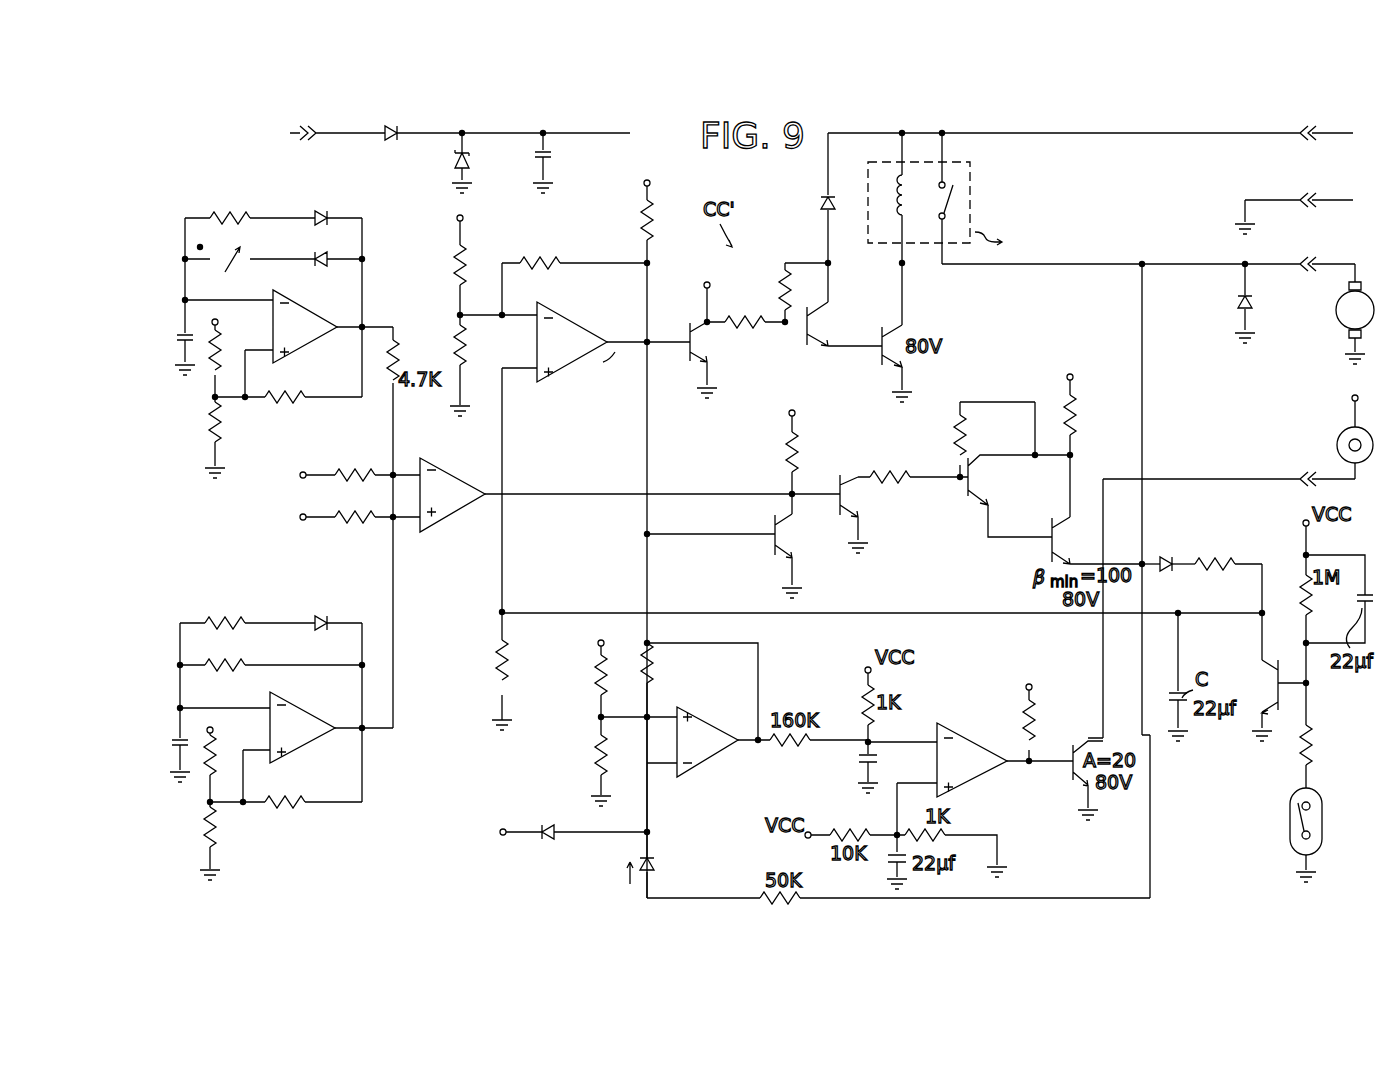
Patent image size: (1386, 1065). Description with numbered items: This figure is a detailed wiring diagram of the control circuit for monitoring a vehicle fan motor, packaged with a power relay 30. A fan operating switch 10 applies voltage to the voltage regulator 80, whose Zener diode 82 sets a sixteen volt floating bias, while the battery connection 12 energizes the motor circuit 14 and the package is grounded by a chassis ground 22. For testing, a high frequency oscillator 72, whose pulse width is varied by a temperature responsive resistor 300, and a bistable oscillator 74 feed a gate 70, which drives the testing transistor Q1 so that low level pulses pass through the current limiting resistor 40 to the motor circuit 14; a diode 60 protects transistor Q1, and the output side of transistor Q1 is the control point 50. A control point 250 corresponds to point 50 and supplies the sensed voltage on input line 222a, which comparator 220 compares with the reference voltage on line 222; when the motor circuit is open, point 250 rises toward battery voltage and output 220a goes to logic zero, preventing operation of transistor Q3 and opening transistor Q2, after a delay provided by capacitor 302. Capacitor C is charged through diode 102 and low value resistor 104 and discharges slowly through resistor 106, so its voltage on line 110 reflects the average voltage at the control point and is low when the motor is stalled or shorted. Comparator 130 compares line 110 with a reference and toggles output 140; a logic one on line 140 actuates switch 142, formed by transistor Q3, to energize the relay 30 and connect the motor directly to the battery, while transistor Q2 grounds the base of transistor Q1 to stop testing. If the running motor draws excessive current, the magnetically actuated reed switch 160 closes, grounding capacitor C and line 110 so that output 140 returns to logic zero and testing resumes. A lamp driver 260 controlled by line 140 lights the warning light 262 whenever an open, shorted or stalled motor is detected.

The fan operating switch 10 is at (309, 142).
The voltage regulator 80 is at (614, 133).
The Zener diode 82 is at (450, 170).
The temperature responsive resistor 300 is at (215, 247).
The high frequency oscillator 72 is at (365, 258).
The bistable oscillator 74 is at (368, 630).
The gate 70 is at (466, 480).
The comparator 130 is at (580, 315).
The output line 140 is at (645, 449).
The switch 142 is at (698, 344).
The power relay 30 is at (980, 190).
The battery connection 12 is at (1182, 137).
The chassis ground 22 is at (1333, 200).
The control point 50 is at (1144, 264).
The motor circuit 14 is at (1336, 312).
The diode 60 is at (1250, 304).
The current limiting resistor 40 is at (1064, 404).
The resistor 106 is at (498, 682).
The reference voltage line 222 is at (600, 715).
The comparator 220 is at (711, 726).
The output line 220a is at (747, 735).
The input line 222a is at (648, 792).
The control line 110 is at (902, 608).
The capacitor 302 is at (857, 770).
The lamp driver 260 is at (955, 730).
The control point 250 is at (1142, 562).
The diode 102 is at (1169, 560).
The resistor 104 is at (1214, 557).
The warning light 262 is at (1336, 446).
The magnetically actuated switch 160 is at (1291, 814).
The driving transistor Q1 is at (962, 496).
The disabling switch transistor Q2 is at (770, 549).
The switch transistor Q3 is at (804, 300).